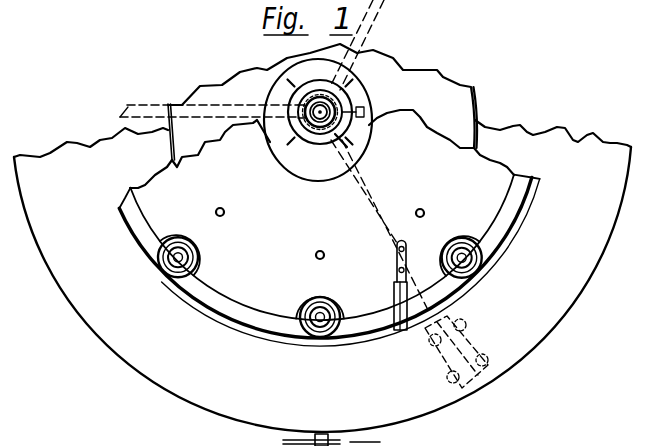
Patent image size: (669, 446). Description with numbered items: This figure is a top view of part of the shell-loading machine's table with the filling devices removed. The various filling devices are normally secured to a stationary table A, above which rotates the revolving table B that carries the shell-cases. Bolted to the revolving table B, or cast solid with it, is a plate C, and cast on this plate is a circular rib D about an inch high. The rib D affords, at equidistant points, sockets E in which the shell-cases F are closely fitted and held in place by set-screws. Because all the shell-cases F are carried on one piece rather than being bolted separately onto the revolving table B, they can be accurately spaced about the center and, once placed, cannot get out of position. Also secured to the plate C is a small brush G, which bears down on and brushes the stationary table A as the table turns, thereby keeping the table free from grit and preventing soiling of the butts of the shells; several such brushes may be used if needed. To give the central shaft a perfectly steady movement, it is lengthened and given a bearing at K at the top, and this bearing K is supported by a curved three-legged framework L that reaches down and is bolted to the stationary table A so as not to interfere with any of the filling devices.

The stationary table A is at (322, 276).
The revolving table B is at (298, 112).
The plate C is at (339, 210).
The circular rib D is at (240, 298).
The sockets E is at (302, 326).
The shell-cases F is at (312, 339).
The brush G is at (403, 332).
The bearing K is at (349, 438).
The curved three-legged framework L is at (365, 33).